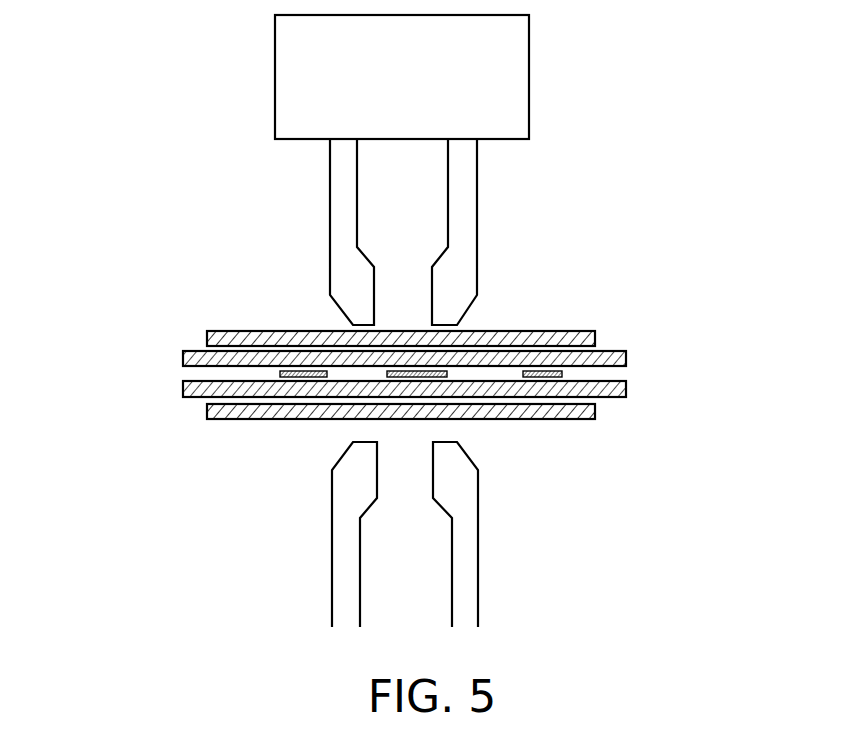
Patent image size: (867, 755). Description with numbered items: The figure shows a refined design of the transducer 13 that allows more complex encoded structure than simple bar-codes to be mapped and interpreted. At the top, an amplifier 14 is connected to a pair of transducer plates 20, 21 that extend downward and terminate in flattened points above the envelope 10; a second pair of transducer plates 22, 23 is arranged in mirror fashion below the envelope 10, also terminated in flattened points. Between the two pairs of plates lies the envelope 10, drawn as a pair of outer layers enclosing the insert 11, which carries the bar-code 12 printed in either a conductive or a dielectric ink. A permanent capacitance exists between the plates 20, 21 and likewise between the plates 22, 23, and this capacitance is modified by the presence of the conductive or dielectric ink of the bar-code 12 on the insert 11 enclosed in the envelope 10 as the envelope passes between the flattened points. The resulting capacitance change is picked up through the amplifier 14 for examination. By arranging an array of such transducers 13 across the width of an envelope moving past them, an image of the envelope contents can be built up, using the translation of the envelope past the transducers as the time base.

The envelope 10 is at (534, 331).
The insert 11 is at (627, 387).
The bar-code 12 is at (280, 373).
The transducer 13 is at (383, 383).
The amplifier 14 is at (416, 86).
The transducer plate 20 is at (337, 203).
The transducer plate 21 is at (465, 211).
The transducer plate 22 is at (332, 578).
The transducer plate 23 is at (480, 578).